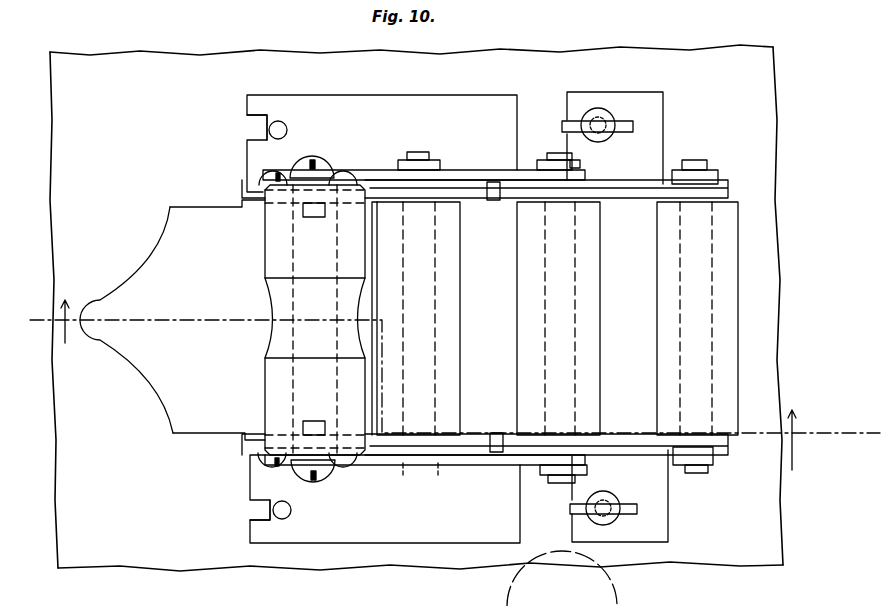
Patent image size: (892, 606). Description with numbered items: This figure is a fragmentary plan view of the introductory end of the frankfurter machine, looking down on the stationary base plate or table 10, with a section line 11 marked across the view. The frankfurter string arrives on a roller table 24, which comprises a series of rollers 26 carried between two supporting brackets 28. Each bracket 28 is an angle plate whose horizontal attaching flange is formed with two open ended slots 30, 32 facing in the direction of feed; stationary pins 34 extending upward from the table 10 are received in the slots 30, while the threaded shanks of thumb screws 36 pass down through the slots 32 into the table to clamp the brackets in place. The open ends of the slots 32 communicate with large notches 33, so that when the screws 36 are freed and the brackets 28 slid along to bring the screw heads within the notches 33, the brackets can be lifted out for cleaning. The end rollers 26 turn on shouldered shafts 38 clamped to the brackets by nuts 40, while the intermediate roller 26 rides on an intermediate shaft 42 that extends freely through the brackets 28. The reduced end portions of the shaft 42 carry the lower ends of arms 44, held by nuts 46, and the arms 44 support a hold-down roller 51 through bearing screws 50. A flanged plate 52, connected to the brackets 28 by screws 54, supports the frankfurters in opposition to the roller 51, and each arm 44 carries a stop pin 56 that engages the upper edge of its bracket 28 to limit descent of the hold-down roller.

The base plate or table 10 is at (105, 562).
The section line 11 is at (455, 385).
The roller table 24 is at (676, 476).
The rollers 26 is at (522, 280).
The supporting brackets 28 is at (634, 191).
The open ended slots 30 is at (262, 124).
The open ended slots 32 is at (566, 124).
The notches 33 is at (518, 102).
The stationary pins 34 is at (281, 129).
The thumb screws 36 is at (621, 122).
The shouldered shafts 38 is at (437, 333).
The nuts 40 is at (438, 170).
The intermediate shaft 42 is at (576, 349).
The arms 44 is at (386, 172).
The nuts 46 is at (579, 165).
The bearing screws 50 is at (319, 161).
The hold-down roller 51 is at (270, 373).
The flanged plate 52 is at (172, 411).
The screws 54 is at (268, 181).
The stop pin 56 is at (493, 199).